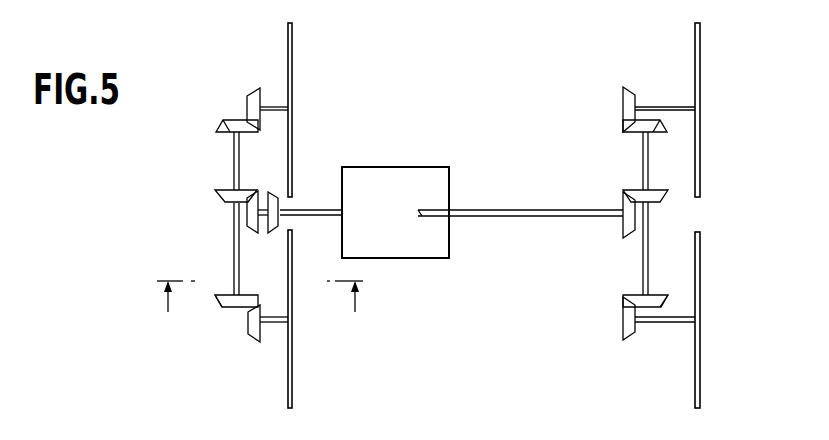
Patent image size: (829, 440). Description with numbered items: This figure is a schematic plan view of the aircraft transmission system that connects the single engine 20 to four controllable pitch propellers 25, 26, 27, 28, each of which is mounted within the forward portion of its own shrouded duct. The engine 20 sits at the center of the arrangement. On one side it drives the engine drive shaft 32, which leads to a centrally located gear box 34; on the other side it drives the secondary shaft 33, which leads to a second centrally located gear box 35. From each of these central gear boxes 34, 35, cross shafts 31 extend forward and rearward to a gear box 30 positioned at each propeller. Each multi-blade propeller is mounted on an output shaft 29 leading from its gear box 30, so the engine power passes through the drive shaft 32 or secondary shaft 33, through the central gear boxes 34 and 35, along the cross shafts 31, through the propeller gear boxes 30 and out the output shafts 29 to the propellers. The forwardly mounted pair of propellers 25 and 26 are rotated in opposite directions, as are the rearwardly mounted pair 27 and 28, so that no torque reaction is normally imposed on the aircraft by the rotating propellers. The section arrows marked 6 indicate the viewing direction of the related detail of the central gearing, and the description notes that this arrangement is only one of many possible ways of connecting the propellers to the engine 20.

The engine 20 is at (387, 228).
The controllable pitch propeller 25 is at (292, 48).
The controllable pitch propeller 26 is at (292, 396).
The controllable pitch propeller 27 is at (701, 41).
The controllable pitch propeller 28 is at (701, 395).
The output shaft 29 is at (271, 110).
The gear box 30 is at (237, 112).
The cross shaft 31 is at (237, 168).
The engine drive shaft 32 is at (327, 209).
The secondary shaft 33 is at (537, 209).
The gear box 34 is at (222, 208).
The gear box 35 is at (622, 220).
The section line for FIG. 6 is at (264, 298).